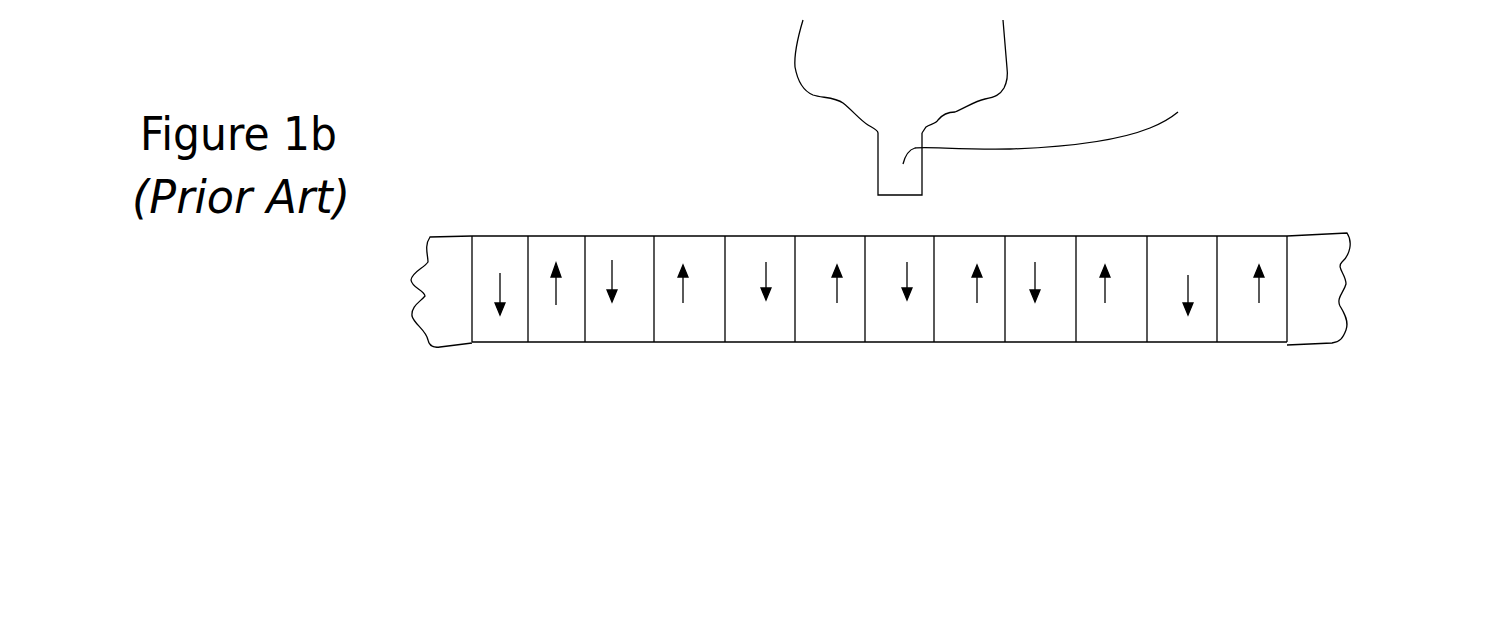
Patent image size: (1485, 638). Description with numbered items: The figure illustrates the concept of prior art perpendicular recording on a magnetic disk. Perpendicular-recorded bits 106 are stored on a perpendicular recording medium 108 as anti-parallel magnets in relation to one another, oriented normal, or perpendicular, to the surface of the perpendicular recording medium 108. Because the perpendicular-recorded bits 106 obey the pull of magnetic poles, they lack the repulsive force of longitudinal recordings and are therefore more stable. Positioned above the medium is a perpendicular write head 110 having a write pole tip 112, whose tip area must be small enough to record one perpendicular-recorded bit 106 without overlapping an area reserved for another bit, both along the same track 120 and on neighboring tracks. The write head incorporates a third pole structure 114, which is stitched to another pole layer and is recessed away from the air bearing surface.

The perpendicular-recorded bits 106 is at (1096, 217).
The perpendicular recording medium 108 is at (1304, 383).
The perpendicular write head 110 is at (1022, 85).
The write pole tip 112 is at (1080, 123).
The pole (P3) structure 114 is at (1053, 105).
The track 120 is at (844, 298).